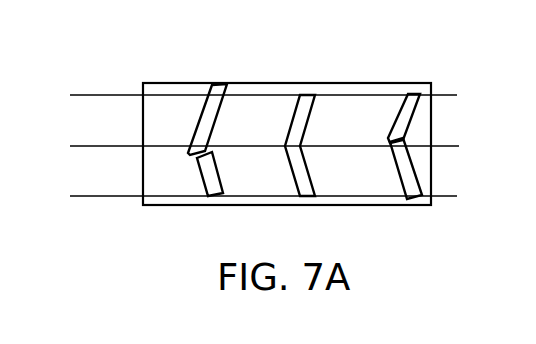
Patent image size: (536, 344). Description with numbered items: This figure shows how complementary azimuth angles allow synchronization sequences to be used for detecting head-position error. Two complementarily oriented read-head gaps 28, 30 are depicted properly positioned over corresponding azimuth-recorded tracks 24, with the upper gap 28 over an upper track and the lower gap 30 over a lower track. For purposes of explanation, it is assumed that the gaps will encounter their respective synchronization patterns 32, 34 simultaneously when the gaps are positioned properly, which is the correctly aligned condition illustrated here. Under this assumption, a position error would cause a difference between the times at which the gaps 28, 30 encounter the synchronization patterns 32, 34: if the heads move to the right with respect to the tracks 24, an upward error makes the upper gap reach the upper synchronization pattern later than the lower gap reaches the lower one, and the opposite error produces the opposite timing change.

The tracks 24 is at (450, 163).
The read-head gap 28 is at (216, 83).
The synchronization pattern 32 is at (216, 188).
The synchronization pattern 34 is at (409, 95).
The read-head gap 30 is at (411, 198).